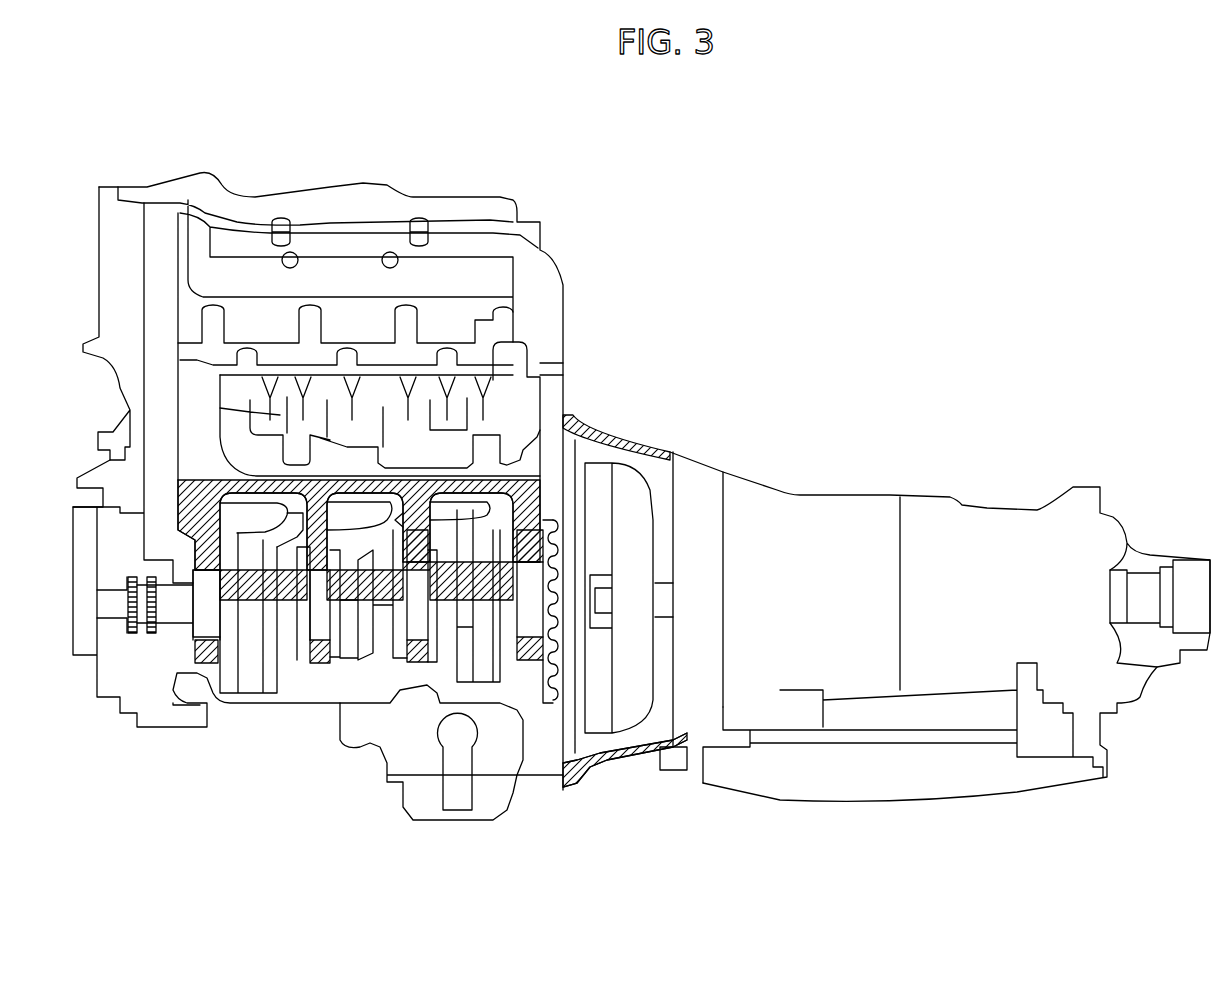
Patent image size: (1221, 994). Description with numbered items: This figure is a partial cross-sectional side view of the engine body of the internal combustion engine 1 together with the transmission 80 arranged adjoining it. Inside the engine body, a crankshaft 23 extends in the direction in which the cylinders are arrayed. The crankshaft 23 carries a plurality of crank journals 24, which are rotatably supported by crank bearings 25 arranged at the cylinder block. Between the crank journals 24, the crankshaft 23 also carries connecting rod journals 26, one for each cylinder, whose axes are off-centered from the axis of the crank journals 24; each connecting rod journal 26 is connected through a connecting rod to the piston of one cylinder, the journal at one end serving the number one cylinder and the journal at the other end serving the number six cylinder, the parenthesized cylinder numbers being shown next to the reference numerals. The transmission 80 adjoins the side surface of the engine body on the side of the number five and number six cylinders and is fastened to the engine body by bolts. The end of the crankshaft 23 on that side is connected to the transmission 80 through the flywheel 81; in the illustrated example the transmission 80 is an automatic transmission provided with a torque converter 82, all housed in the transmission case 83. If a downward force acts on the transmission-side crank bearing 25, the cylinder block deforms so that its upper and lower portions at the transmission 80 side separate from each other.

The internal combustion engine 1 is at (556, 155).
The crankshaft 23 is at (177, 657).
The crank journal 24 is at (177, 613).
The crank bearing 25 is at (207, 657).
The connecting rod journal 26 is at (248, 590).
The transmission 80 is at (750, 378).
The flywheel 81 is at (572, 470).
The torque converter 82 is at (632, 493).
The transmission case 83 is at (803, 507).